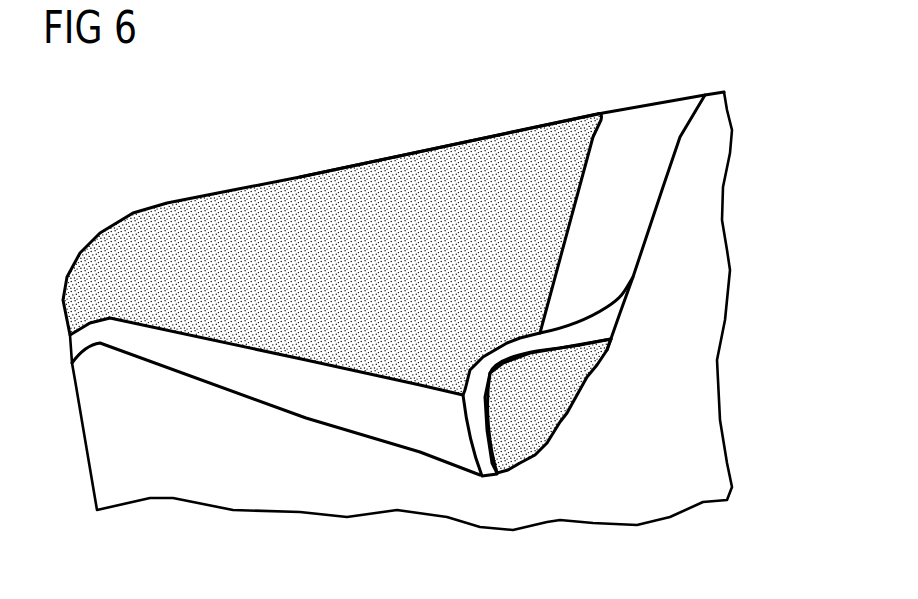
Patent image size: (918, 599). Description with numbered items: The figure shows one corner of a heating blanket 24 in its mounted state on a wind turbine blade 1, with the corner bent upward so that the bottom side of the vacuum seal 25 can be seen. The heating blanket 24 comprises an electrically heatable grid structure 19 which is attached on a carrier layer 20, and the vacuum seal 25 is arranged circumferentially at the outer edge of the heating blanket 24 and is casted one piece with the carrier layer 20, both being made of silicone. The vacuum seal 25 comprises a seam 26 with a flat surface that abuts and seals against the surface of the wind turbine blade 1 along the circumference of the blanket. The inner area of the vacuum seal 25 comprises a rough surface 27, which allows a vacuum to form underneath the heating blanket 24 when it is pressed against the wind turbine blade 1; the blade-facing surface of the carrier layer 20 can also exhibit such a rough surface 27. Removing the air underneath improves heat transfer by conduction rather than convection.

The wind turbine blade 1 is at (700, 360).
The electrically heatable grid structure 19 is at (432, 163).
The carrier layer 20 is at (600, 228).
The heating blanket 24 is at (639, 115).
The vacuum seal 25 is at (648, 153).
The seam 26 is at (490, 467).
The rough surface 27 is at (540, 412).